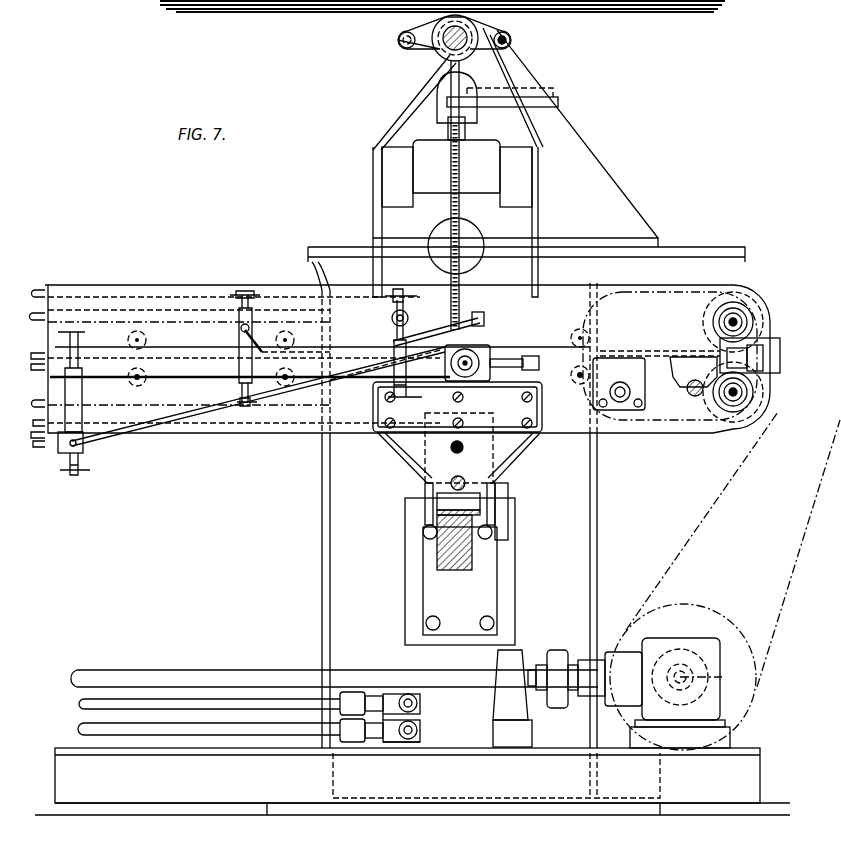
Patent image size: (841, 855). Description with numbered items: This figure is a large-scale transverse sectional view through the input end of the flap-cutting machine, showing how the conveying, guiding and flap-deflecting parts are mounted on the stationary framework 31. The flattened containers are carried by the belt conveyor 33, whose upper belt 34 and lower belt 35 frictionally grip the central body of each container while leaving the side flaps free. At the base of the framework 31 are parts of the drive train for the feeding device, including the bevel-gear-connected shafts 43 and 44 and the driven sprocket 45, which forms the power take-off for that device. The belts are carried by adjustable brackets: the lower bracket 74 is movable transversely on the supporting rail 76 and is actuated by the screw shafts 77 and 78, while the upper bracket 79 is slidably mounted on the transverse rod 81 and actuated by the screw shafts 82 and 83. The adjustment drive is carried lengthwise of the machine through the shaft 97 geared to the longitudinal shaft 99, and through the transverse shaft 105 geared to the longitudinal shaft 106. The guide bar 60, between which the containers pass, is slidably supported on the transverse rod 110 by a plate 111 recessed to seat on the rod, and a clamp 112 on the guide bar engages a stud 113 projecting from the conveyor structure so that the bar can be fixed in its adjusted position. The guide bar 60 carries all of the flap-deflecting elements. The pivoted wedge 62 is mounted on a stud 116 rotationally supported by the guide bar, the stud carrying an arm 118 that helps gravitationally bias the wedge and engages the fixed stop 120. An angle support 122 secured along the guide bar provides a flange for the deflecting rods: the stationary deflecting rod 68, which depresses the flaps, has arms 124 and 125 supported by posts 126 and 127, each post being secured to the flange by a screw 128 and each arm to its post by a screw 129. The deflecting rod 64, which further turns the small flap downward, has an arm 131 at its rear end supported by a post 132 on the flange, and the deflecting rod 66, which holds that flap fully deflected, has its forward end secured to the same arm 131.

The stationary framework 31 is at (320, 556).
The conveyor 33 is at (762, 332).
The upper belt 34 is at (740, 291).
The lower belt 35 is at (768, 386).
The shaft 43 is at (210, 670).
The shaft 44 is at (692, 679).
The driven sprocket 45 is at (708, 608).
The guide bar 60 is at (667, 350).
The wedge 62 is at (497, 392).
The deflecting rod 64 is at (300, 387).
The deflecting rod 66 is at (63, 473).
The deflecting rod 68 is at (474, 322).
The lower bracket 74 is at (412, 456).
The supporting rail 76 is at (465, 568).
The screw shaft 77 is at (453, 450).
The screw shaft 78 is at (464, 478).
The upper bracket 79 is at (388, 141).
The transverse rod 81 is at (450, 39).
The screw shaft 82 is at (508, 41).
The screw shaft 83 is at (400, 43).
The shaft 97 is at (421, 733).
The longitudinal shaft 99 is at (82, 733).
The transverse shaft 105 is at (421, 703).
The longitudinal shaft 106 is at (80, 704).
The transverse rod 110 is at (699, 397).
The plate 111 is at (680, 380).
The clamp 112 is at (598, 398).
The stud 113 is at (623, 402).
The stud 116 is at (480, 359).
The arm 118 is at (527, 366).
The fixed stop 120 is at (525, 372).
The angle support 122 is at (207, 378).
The arm 124 is at (396, 322).
The arm 125 is at (241, 329).
The post 126 is at (408, 324).
The post 127 is at (252, 331).
The screw 128 is at (247, 406).
The screw 129 is at (247, 292).
The arm 131 is at (85, 443).
The post 132 is at (79, 391).